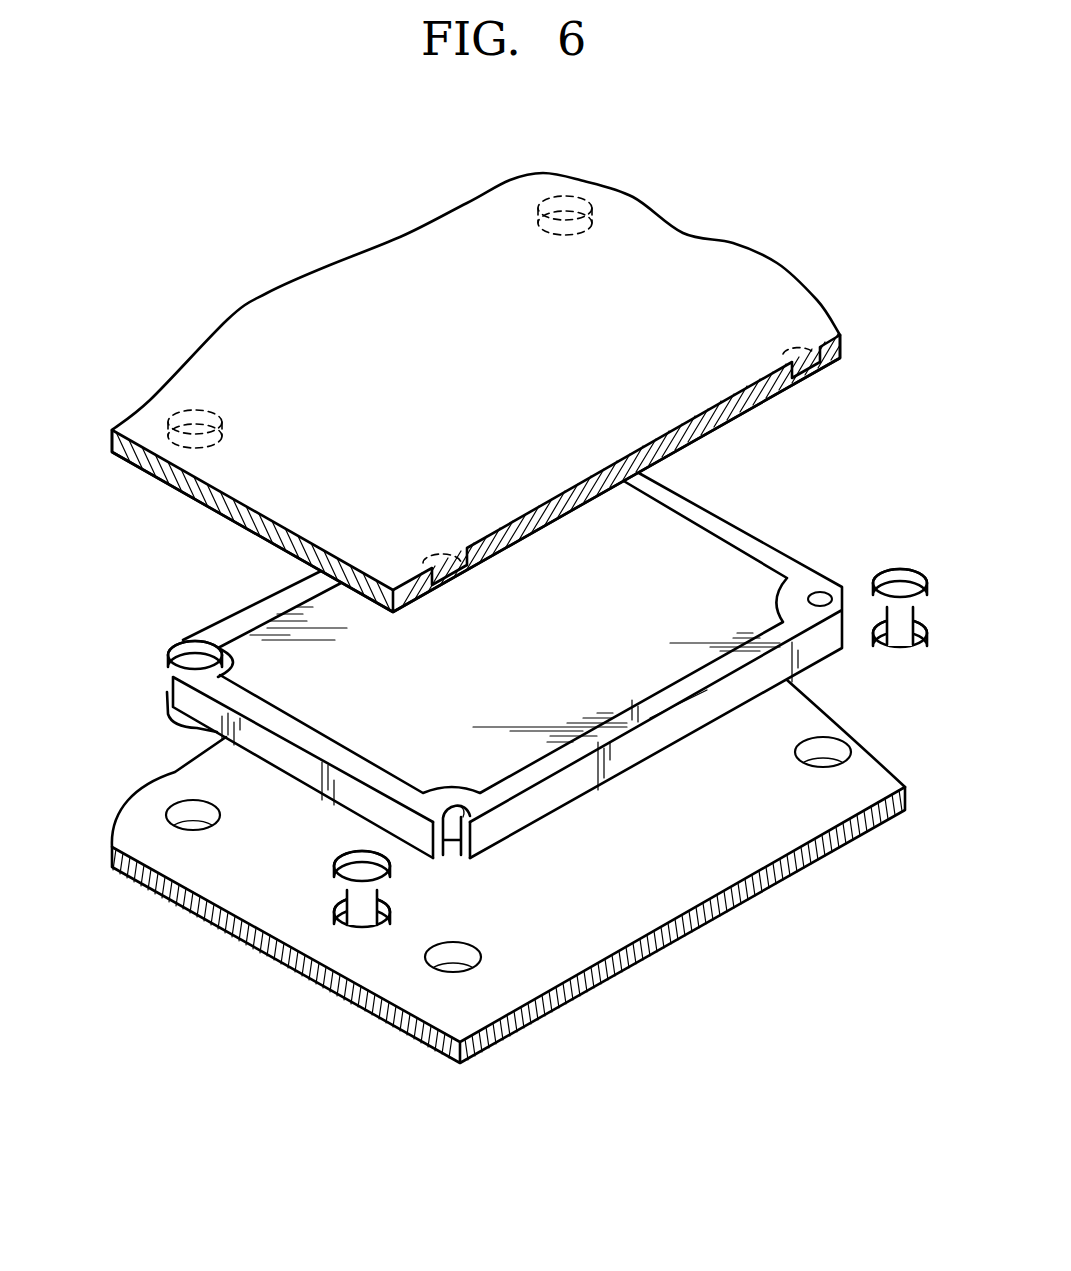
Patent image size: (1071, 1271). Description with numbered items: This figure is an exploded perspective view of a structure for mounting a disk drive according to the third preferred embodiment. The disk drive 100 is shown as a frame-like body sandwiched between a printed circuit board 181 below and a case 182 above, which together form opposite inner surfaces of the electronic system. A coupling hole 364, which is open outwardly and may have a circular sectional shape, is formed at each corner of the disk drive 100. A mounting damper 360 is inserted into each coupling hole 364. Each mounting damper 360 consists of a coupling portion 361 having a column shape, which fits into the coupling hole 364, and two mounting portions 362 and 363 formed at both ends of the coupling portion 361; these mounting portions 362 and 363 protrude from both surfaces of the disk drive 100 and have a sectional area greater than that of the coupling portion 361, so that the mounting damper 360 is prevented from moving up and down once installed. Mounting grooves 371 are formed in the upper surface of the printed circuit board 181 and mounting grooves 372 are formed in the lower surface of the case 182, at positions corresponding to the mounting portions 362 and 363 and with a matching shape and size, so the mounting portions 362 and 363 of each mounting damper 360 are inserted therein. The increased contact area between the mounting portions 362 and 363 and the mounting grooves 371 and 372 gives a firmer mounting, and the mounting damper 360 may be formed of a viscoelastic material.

The disk drive 100 is at (504, 659).
The printed circuit board 181 is at (680, 937).
The case 182 is at (550, 523).
The mounting damper 360 is at (520, 777).
The coupling portion 361 is at (320, 961).
The mounting portion 362 is at (360, 933).
The mounting portion 363 is at (340, 887).
The coupling hole 364 is at (480, 813).
The mounting groove 371 is at (187, 818).
The mounting groove 372 is at (578, 212).